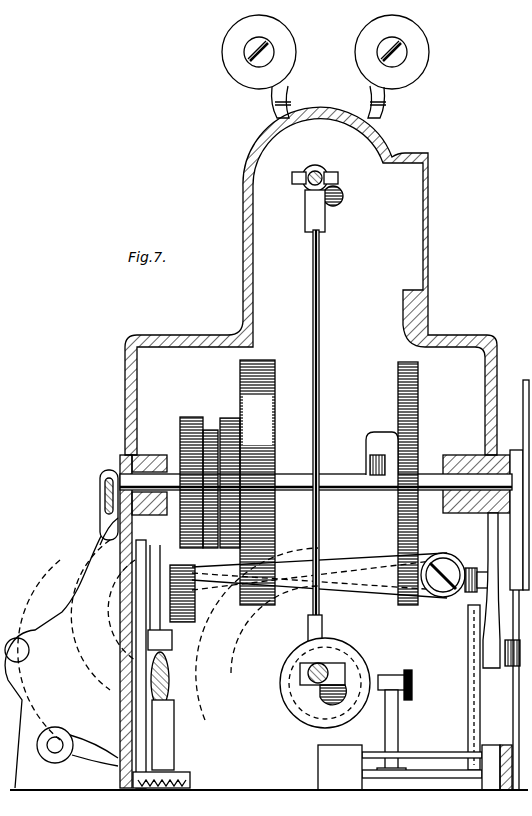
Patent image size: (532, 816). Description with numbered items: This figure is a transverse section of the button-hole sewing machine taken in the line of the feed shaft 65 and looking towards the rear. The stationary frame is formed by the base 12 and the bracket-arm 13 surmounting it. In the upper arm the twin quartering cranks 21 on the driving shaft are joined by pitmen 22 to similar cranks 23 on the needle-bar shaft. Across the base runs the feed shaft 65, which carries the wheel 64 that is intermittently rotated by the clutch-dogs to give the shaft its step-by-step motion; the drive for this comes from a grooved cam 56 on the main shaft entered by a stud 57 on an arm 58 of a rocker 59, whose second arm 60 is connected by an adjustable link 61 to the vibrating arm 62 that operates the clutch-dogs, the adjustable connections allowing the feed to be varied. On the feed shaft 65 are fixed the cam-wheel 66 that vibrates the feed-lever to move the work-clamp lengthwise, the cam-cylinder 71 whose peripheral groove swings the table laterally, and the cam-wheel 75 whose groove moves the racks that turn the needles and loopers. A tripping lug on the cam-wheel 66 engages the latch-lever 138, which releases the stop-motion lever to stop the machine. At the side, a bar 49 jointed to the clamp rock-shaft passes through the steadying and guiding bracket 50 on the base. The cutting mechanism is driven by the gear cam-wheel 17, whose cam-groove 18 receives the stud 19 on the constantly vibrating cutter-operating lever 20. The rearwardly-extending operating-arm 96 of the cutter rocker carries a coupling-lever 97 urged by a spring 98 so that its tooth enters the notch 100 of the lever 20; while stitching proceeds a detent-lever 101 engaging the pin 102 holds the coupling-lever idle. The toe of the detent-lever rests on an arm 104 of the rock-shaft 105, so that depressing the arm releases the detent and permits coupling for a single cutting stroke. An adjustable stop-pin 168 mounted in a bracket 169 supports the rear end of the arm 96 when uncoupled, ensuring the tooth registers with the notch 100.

The base 12 is at (118, 572).
The bracket-arm 13 is at (243, 303).
The gear cam-wheel 17 is at (188, 774).
The cam-groove 18 is at (250, 653).
The stud 19 is at (200, 582).
The cutter-operating lever 20 is at (340, 548).
The twin quartering cranks 21 is at (325, 670).
The pitmen 22 is at (320, 398).
The cranks 23 is at (338, 200).
The bar 49 is at (100, 494).
The steadying and guiding bracket 50 is at (108, 470).
The grooved cam 56 is at (366, 672).
The stud 57 is at (396, 675).
The arm 58 is at (398, 722).
The rocker 59 is at (412, 752).
The second arm 60 is at (470, 708).
The link 61 is at (490, 636).
The vibrating arm 62 is at (510, 547).
The wheel 64 is at (526, 432).
The feed shaft 65 is at (330, 474).
The cam-wheel 66 is at (419, 424).
The cam-cylinder 71 is at (190, 418).
The cam-wheel 75 is at (257, 482).
The operating-arm 96 is at (172, 672).
The coupling-lever 97 is at (172, 644).
The spring 98 is at (194, 735).
The notch 100 is at (100, 532).
The detent-lever 101 is at (136, 651).
The pin 102 is at (120, 628).
The arm 104 is at (118, 722).
The rock-shaft 105 is at (57, 773).
The latch-lever 138 is at (392, 470).
The adjustable stop-pin 168 is at (118, 750).
The bracket 169 is at (118, 766).